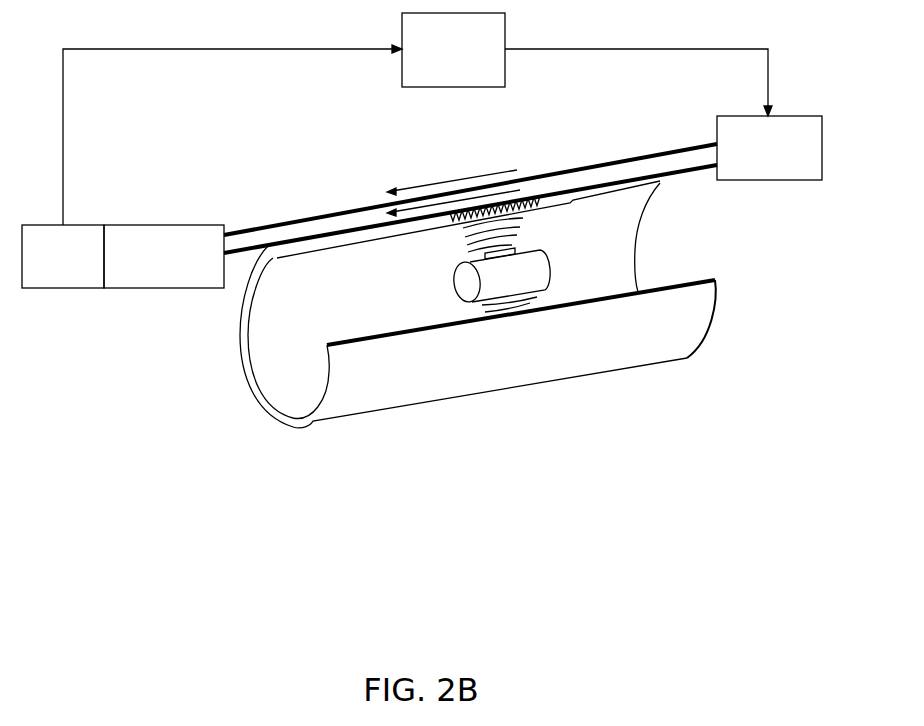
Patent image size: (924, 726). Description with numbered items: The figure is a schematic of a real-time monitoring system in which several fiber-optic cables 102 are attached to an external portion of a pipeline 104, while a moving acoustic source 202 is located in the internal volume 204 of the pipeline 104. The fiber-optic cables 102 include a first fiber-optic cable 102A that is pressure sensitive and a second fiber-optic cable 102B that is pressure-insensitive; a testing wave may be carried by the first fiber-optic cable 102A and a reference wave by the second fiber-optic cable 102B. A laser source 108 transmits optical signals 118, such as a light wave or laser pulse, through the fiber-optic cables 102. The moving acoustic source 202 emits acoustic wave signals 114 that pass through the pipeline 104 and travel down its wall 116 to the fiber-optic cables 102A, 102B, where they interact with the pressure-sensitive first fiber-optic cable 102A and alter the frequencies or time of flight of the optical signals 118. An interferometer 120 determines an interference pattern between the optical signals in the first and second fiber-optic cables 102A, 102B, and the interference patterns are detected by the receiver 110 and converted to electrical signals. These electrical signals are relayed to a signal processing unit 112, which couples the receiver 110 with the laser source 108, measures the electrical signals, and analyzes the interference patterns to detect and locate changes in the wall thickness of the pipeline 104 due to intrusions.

The fiber-optic cables 102 is at (447, 188).
The first fiber-optic cable 102A is at (288, 224).
The second fiber-optic cable 102B is at (265, 245).
The pipeline 104 is at (482, 304).
The laser source 108 is at (751, 159).
The receiver 110 is at (45, 269).
The signal processing unit 112 is at (435, 61).
The acoustic wave signals 114 is at (520, 242).
The wall 116 is at (356, 244).
The optical signals 118 is at (449, 193).
The interferometer 120 is at (146, 269).
The moving acoustic source 202 is at (533, 259).
The internal volume 204 is at (577, 282).